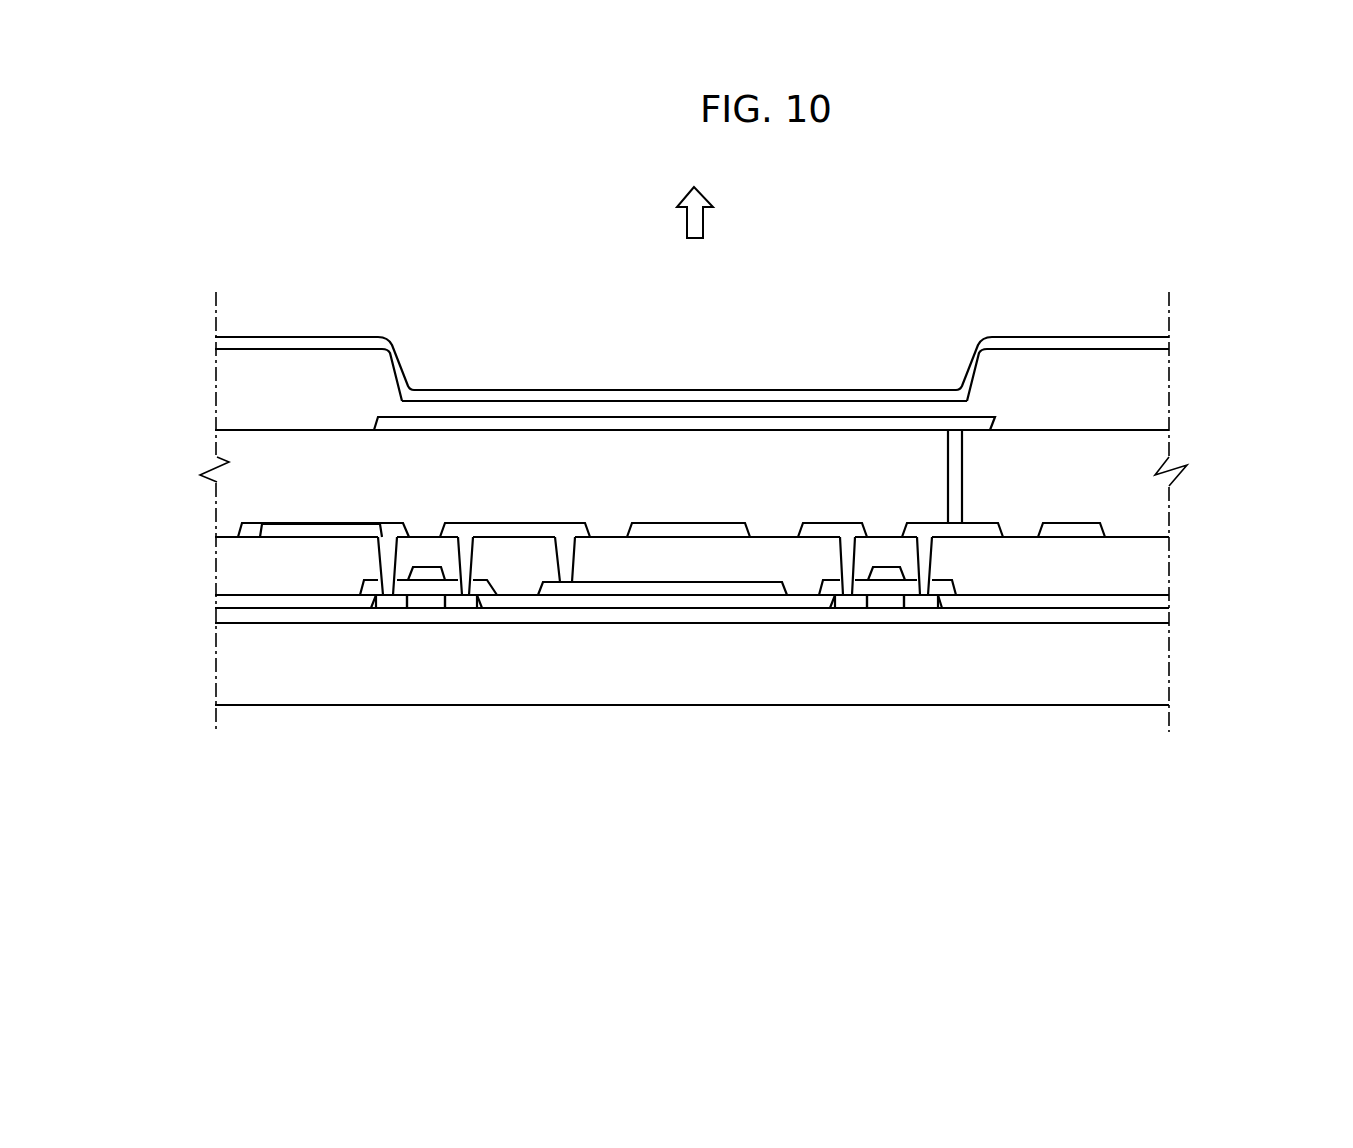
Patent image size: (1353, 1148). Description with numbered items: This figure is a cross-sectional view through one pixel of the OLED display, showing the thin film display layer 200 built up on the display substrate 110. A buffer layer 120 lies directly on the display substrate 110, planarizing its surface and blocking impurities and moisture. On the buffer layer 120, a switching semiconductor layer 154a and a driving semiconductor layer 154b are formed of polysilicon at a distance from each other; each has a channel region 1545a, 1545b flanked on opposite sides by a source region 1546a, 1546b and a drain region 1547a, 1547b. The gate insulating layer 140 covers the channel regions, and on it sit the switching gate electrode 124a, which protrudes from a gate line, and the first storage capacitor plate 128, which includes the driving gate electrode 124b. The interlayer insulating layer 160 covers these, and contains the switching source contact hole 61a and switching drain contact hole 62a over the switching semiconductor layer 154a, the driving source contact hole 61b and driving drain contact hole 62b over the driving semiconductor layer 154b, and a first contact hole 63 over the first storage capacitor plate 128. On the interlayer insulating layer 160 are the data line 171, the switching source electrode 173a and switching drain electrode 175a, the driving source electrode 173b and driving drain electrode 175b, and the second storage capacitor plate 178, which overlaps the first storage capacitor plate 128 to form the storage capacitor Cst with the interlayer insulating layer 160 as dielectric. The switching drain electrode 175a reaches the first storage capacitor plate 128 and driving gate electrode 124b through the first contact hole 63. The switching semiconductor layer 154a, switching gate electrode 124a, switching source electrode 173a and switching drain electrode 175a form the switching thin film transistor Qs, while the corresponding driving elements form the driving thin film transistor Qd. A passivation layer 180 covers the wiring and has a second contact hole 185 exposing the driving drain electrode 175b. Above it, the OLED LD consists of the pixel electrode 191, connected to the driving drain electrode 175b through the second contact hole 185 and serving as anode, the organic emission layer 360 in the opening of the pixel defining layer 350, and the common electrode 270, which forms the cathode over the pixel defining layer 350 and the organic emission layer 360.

The display substrate 110 is at (1145, 668).
The buffer layer 120 is at (1155, 617).
The gate insulating layer 140 is at (1158, 603).
The interlayer insulating layer 160 is at (1145, 560).
The data line 171 is at (258, 530).
The switching source electrode 173a is at (337, 531).
The switching drain electrode 175a is at (508, 530).
The driving source electrode 173b is at (817, 530).
The driving drain electrode 175b is at (987, 532).
The switching gate electrode 124a is at (417, 574).
The driving gate electrode 124b is at (900, 575).
The switching semiconductor layer 154a is at (515, 790).
The source region 1546a is at (388, 598).
The channel region 1545a is at (425, 603).
The drain region 1547a is at (462, 603).
The driving semiconductor layer 154b is at (980, 790).
The source region 1546b is at (848, 598).
The channel region 1545b is at (885, 603).
The drain region 1547b is at (923, 603).
The first storage capacitor plate 128 is at (653, 588).
The second storage capacitor plate 178 is at (718, 530).
The passivation layer 180 is at (1145, 499).
The second contact hole 185 is at (953, 468).
The pixel electrode 191 is at (625, 425).
The organic emission layer 360 is at (687, 412).
The common electrode 270 is at (754, 398).
The pixel defining layer 350 is at (1145, 388).
The thin film display layer 200 is at (1247, 627).
The switching source contact hole 61a is at (388, 553).
The switching drain contact hole 62a is at (467, 580).
The driving source contact hole 61b is at (847, 553).
The driving drain contact hole 62b is at (921, 550).
The first contact hole 63 is at (573, 552).
The OLED LD is at (765, 303).
The storage capacitor Cst is at (738, 790).
The switching thin film transistor Qs is at (590, 835).
The driving thin film transistor Qd is at (753, 835).